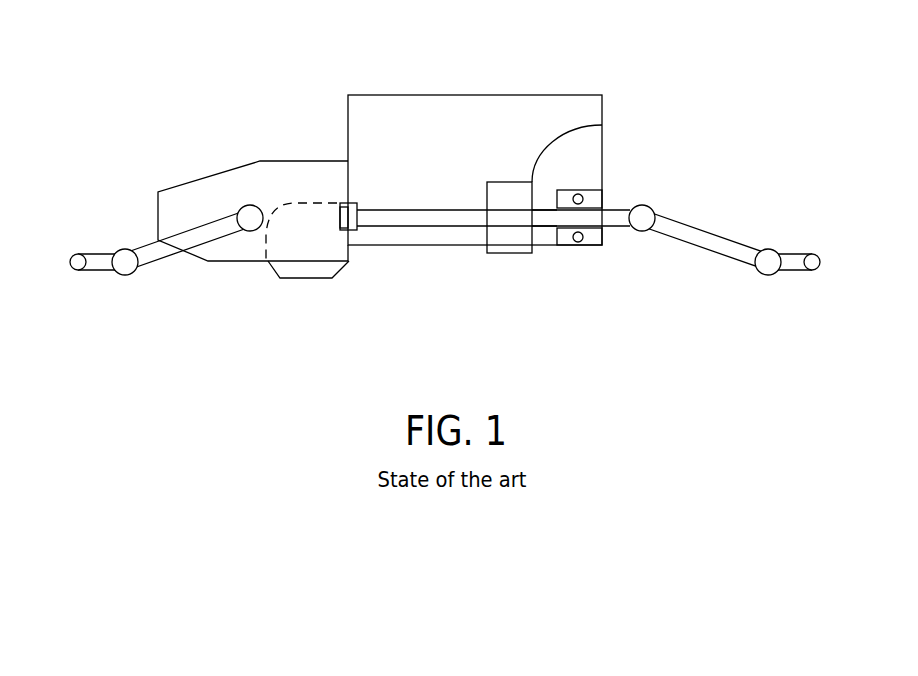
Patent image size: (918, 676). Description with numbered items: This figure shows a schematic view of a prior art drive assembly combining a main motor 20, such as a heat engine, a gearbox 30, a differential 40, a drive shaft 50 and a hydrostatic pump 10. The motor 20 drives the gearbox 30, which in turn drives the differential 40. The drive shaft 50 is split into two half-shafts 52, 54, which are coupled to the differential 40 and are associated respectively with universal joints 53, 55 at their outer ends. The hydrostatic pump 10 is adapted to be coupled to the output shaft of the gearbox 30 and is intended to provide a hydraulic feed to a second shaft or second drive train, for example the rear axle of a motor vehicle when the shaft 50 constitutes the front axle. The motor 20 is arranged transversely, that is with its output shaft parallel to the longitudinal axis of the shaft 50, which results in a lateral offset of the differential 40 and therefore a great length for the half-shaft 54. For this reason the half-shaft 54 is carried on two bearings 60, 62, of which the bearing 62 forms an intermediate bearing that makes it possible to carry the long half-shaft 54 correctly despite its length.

The hydrostatic pump 10 is at (511, 190).
The main motor 20 is at (408, 103).
The gearbox 30 is at (235, 175).
The differential 40 is at (305, 273).
The drive shaft 50 is at (382, 218).
The half-shaft 52 is at (170, 255).
The universal joint 53 is at (125, 249).
The half-shaft 54 is at (547, 217).
The universal joint 55 is at (652, 228).
The bearing 60 is at (348, 228).
The intermediate bearing 62 is at (598, 228).